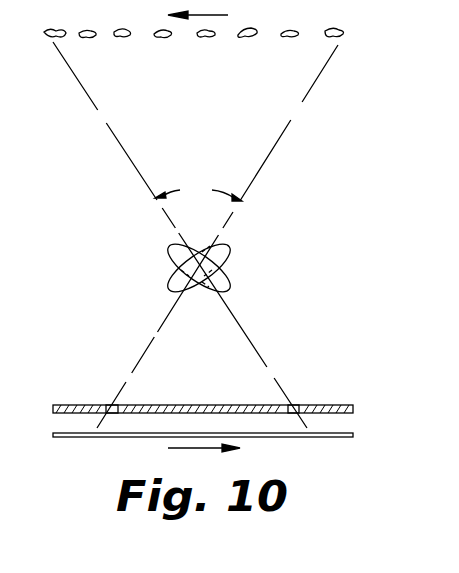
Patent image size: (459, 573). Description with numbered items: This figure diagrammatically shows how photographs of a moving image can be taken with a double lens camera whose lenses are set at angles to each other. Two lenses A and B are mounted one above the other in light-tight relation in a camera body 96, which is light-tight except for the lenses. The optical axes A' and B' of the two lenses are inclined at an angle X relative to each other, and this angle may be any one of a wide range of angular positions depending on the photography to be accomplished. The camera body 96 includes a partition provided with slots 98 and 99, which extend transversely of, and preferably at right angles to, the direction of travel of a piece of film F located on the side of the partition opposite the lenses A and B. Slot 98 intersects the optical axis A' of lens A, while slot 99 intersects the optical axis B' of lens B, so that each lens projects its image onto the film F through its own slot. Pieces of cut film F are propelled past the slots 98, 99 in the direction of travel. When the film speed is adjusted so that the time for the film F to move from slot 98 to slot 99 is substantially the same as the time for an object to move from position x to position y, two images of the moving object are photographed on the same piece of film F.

The camera body 96 is at (343, 398).
The slot 98 is at (293, 404).
The slot 99 is at (112, 403).
The film F is at (331, 440).
The lens A is at (183, 268).
The lens B is at (209, 268).
The optical axis of lens A A' is at (180, 235).
The optical axis of lens B B' is at (217, 236).
The angle X is at (198, 192).
The object position x is at (334, 22).
The object position y is at (48, 22).